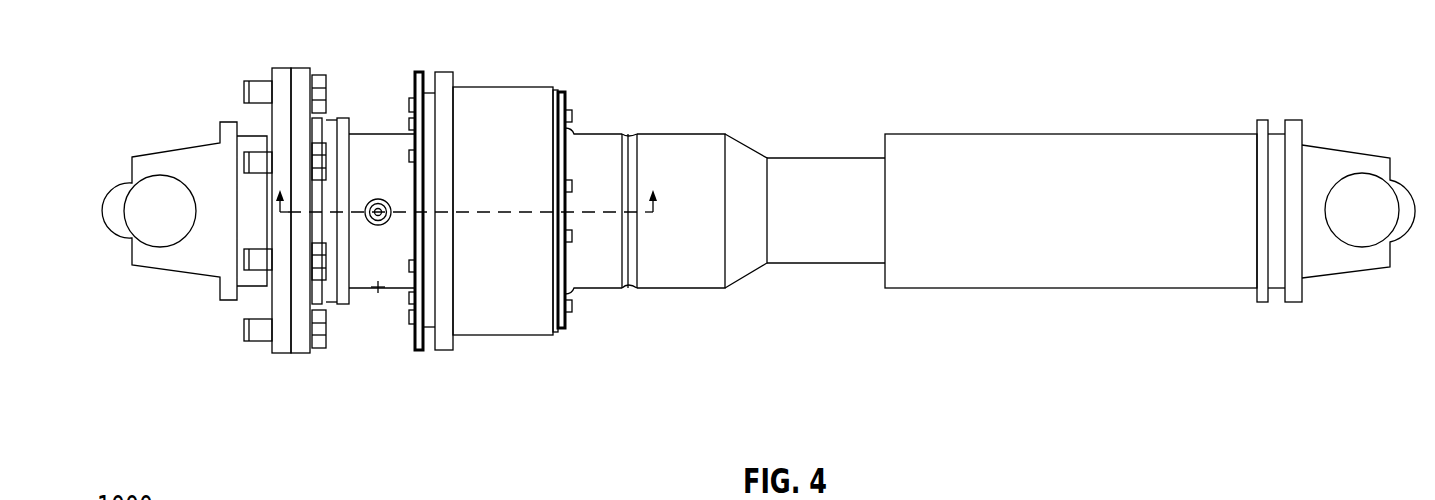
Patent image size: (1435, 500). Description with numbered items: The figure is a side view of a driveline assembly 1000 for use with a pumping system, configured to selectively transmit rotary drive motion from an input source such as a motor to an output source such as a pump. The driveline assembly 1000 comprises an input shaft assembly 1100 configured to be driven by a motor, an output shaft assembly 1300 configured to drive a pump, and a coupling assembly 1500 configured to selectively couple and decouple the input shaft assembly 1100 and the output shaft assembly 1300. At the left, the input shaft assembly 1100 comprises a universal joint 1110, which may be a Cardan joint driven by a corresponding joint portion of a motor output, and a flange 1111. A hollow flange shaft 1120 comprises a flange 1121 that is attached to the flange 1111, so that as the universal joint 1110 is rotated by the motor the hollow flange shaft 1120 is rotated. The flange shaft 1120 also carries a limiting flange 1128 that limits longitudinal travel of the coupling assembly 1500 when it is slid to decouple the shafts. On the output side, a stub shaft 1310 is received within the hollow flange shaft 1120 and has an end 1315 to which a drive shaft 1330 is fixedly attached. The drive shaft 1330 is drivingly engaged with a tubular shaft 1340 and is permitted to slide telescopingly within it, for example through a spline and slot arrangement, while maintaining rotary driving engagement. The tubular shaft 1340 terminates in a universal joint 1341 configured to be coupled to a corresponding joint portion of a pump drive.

The driveline assembly 1000 is at (189, 53).
The input shaft assembly 1100 is at (172, 347).
The universal joint 1110 is at (160, 247).
The flange 1111 is at (272, 347).
The flange 1121 is at (298, 345).
The hollow flange shaft 1120 is at (378, 282).
The limiting flange 1128 is at (343, 118).
The coupling assembly 1500 is at (481, 379).
The output shaft assembly 1300 is at (936, 306).
The stub shaft 1310 is at (595, 147).
The end 1315 is at (615, 163).
The drive shaft 1330 is at (817, 170).
The tubular shaft 1340 is at (1162, 157).
The universal joint 1341 is at (1347, 170).